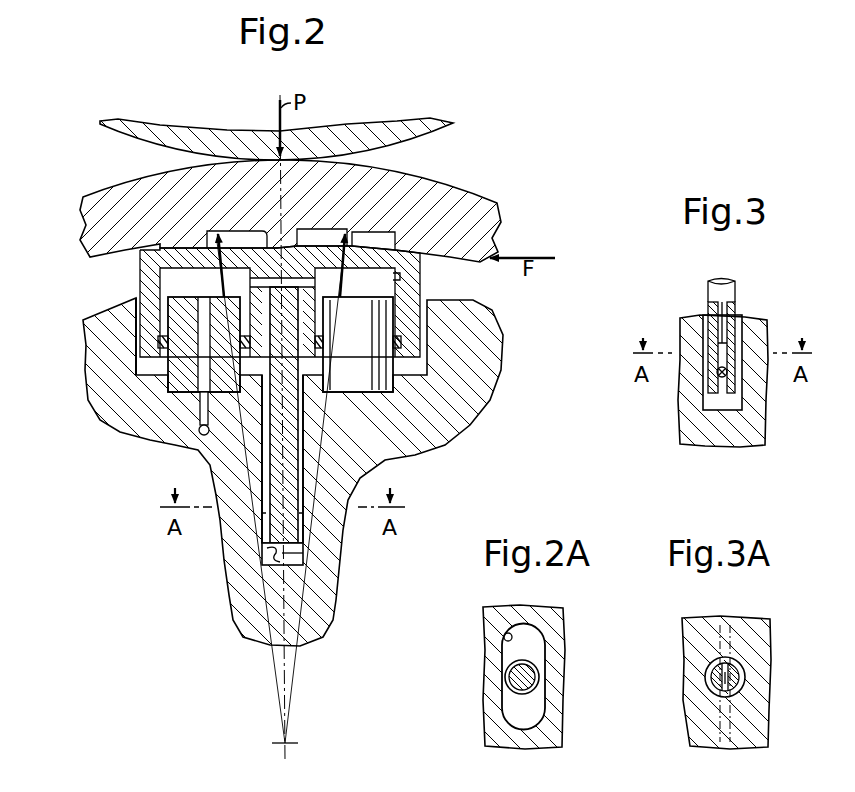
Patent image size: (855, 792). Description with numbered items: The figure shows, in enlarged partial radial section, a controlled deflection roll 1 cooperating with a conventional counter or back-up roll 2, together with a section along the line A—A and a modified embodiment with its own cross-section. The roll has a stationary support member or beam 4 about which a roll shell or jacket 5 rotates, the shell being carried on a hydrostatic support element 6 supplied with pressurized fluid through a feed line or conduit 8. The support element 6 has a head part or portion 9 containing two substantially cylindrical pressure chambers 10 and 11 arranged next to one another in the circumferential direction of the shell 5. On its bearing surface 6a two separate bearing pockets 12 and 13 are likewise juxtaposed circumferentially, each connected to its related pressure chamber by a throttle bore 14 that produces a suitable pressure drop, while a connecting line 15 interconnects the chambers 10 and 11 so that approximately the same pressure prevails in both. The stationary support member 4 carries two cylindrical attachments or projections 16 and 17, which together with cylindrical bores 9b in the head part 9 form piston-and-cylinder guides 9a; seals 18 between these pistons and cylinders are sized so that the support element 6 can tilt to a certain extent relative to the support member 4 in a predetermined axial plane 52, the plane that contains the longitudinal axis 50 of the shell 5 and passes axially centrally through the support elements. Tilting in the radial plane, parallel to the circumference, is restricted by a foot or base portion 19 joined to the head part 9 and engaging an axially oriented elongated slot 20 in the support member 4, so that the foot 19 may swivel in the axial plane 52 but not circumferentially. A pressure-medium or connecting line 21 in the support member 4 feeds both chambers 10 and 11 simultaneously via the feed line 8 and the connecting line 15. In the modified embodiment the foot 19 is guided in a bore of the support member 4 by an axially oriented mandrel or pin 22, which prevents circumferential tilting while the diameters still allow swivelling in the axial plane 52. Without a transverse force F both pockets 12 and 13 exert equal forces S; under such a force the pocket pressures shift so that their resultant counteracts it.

In FIG. 2, the controlled deflection roll 1 is at (493, 197).
In FIG. 2, the counter or back-up roll 2 is at (412, 125).
In FIG. 2, the stationary support member or beam 4 is at (455, 397).
In FIG. 3, the stationary support member or beam 4 is at (690, 440).
In FIG. 2A, the stationary support member or beam 4 is at (553, 628).
In FIG. 3A, the stationary support member or beam 4 is at (750, 635).
In FIG. 2, the roll shell or jacket 5 is at (100, 230).
In FIG. 2, the hydrostatic support element 6 is at (135, 266).
In FIG. 2, the bearing surface 6a is at (100, 198).
In FIG. 2, the feed line or conduit 8 is at (198, 440).
In FIG. 2, the head part or portion 9 is at (425, 268).
In FIG. 2, the piston-and-cylinder guide or unit 9a is at (134, 297).
In FIG. 2, the cylindrical bore 9b is at (400, 280).
In FIG. 2, the pressure chamber or compartment 10 is at (215, 281).
In FIG. 2, the pressure chamber or compartment 11 is at (375, 290).
In FIG. 2, the bearing pocket 12 is at (162, 246).
In FIG. 2, the bearing pocket 13 is at (415, 250).
In FIG. 2, the throttle bore 14 is at (180, 243).
In FIG. 2, the connecting line or conduit 15 is at (318, 260).
In FIG. 2, the cylindrical attachment or projection 16 is at (203, 385).
In FIG. 2, the cylindrical attachment or projection 17 is at (393, 440).
In FIG. 2, the seal or sealing element 18 is at (158, 343).
In FIG. 2, the foot or base portion 19 is at (272, 525).
In FIG. 3, the foot or base portion 19 is at (708, 291).
In FIG. 2A, the foot or base portion 19 is at (515, 692).
In FIG. 3A, the foot or base portion 19 is at (712, 688).
In FIG. 2, the elongated slot 20 is at (263, 560).
In FIG. 2A, the elongated slot 20 is at (505, 635).
In FIG. 2, the pressure-medium or connecting line 21 is at (200, 434).
In FIG. 3, the mandrel or pin 22 is at (735, 376).
In FIG. 3A, the mandrel or pin 22 is at (745, 680).
In FIG. 2, the longitudinal axis 50 is at (287, 743).
In FIG. 2, the predetermined axial plane 52 is at (290, 553).